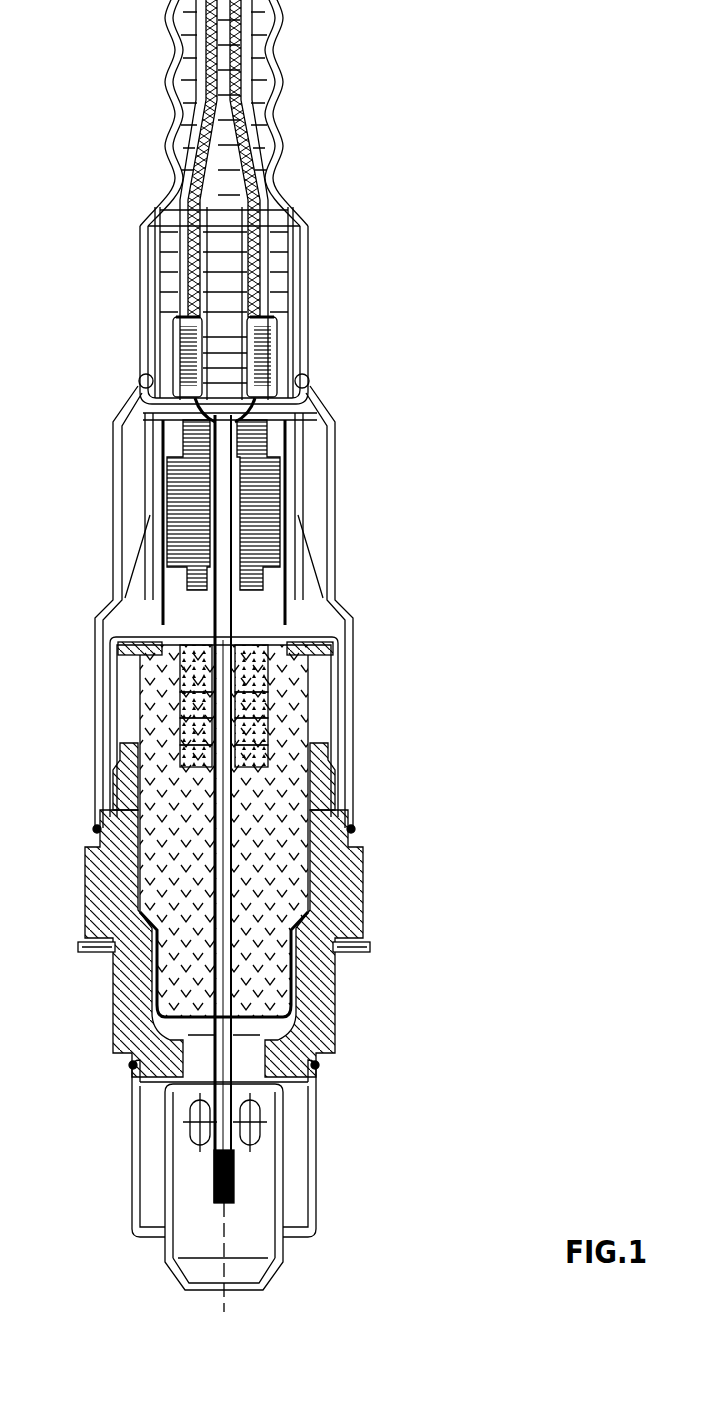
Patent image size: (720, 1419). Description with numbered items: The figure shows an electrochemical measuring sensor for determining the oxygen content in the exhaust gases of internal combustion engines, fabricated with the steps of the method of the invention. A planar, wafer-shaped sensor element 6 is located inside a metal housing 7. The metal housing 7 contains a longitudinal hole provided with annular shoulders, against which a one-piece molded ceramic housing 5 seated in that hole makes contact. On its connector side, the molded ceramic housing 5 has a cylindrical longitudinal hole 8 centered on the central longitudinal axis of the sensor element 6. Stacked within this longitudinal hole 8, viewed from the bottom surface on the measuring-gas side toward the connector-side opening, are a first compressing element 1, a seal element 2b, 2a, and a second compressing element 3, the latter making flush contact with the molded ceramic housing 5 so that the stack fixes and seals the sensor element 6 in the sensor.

The first compressing element 1 is at (252, 759).
The seal element 2a is at (252, 704).
The seal element 2b is at (252, 731).
The second compressing element 3 is at (252, 663).
The molded ceramic housing 5 is at (268, 823).
The sensor element 6 is at (224, 893).
The metal housing 7 is at (360, 927).
The cylindrical longitudinal hole 8 is at (185, 712).